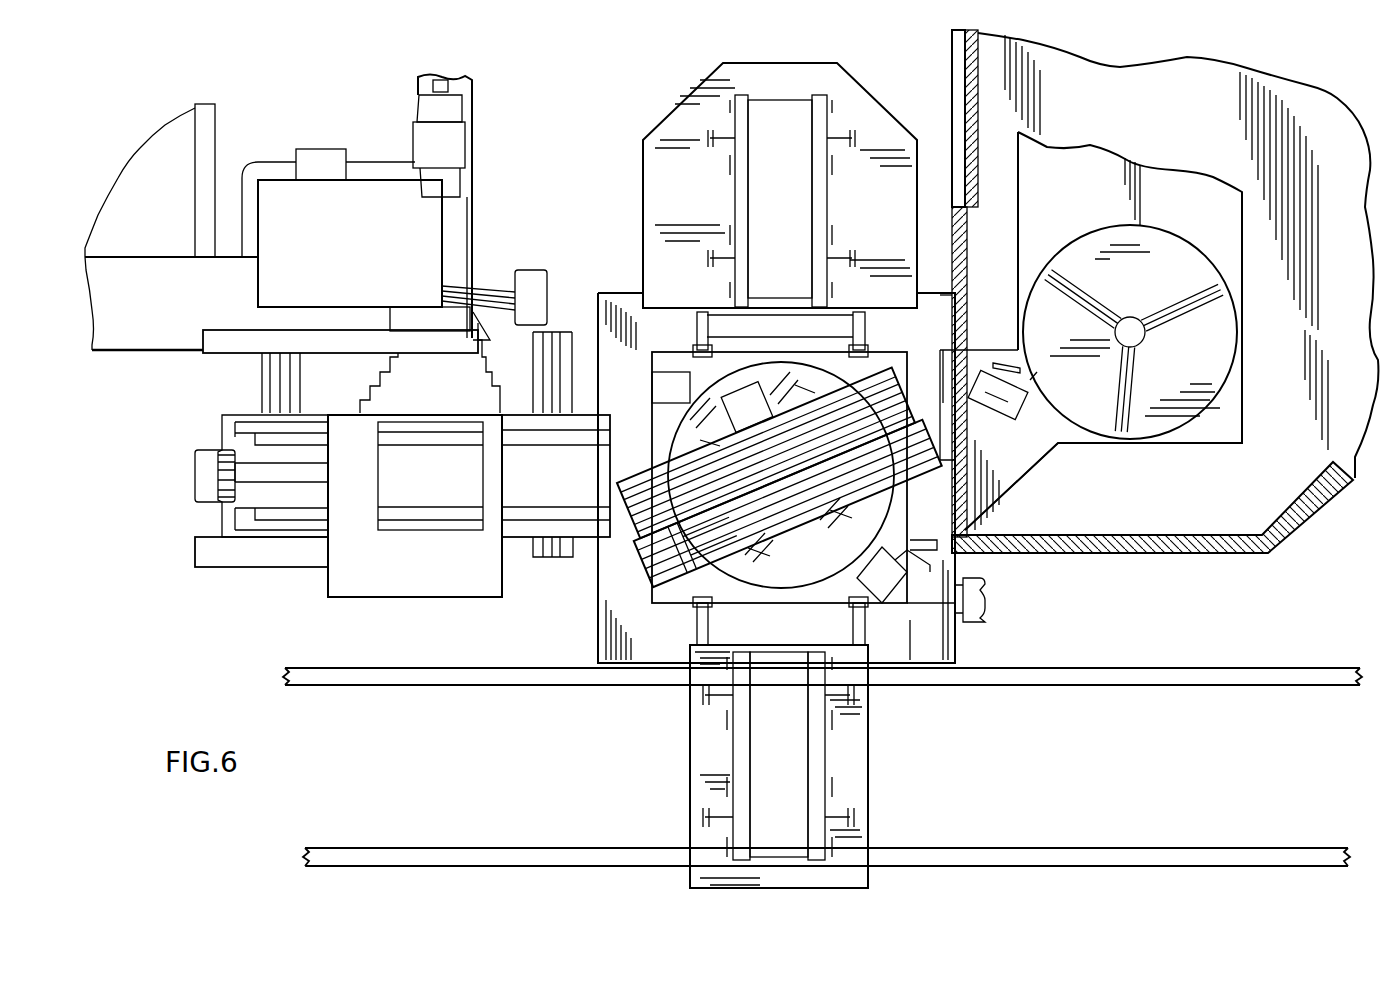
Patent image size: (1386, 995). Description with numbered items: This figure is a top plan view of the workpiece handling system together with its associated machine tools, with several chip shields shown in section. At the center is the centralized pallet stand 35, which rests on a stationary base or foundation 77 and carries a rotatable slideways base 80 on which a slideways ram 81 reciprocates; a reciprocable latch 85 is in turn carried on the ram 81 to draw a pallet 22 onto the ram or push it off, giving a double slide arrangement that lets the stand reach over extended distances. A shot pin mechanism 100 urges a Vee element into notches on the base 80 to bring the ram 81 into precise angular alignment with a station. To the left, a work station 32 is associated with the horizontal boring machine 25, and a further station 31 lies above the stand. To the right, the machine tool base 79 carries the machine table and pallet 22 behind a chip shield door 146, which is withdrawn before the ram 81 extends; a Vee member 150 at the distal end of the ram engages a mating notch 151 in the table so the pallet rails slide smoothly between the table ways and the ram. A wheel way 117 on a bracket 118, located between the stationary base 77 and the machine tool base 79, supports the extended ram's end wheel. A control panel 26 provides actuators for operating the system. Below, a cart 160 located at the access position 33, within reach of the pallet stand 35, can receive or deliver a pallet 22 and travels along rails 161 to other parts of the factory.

The horizontal boring machine 25 is at (309, 112).
The station 31 is at (782, 214).
The work station 32 is at (402, 506).
The centralized pallet stand 35 is at (594, 560).
The rotatable slideways base 80 is at (781, 475).
The slideways ram 81 is at (680, 455).
The reciprocable latch 85 is at (662, 567).
The shot pin mechanism 100 is at (870, 568).
The stationary base 77 is at (934, 642).
The Vee member 150 is at (946, 356).
The chip shield door 146 is at (965, 250).
The machine tool base 79 is at (1208, 219).
The pallet 22 is at (1140, 270).
The notch 151 is at (1037, 372).
The wheel way 117 is at (995, 418).
The bracket 118 is at (1007, 467).
The control panel 26 is at (985, 600).
The access position 33 is at (680, 733).
The cart 160 is at (785, 740).
The rails 161 is at (1200, 673).